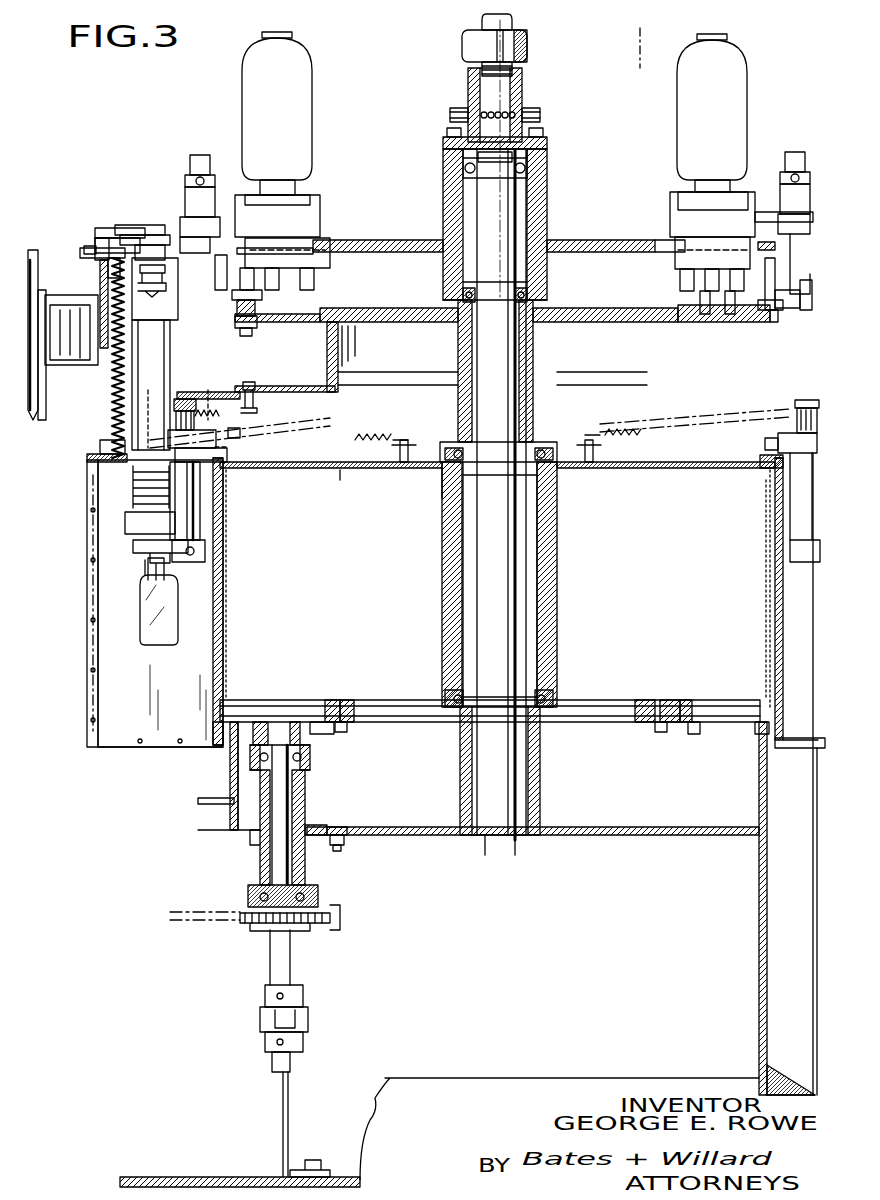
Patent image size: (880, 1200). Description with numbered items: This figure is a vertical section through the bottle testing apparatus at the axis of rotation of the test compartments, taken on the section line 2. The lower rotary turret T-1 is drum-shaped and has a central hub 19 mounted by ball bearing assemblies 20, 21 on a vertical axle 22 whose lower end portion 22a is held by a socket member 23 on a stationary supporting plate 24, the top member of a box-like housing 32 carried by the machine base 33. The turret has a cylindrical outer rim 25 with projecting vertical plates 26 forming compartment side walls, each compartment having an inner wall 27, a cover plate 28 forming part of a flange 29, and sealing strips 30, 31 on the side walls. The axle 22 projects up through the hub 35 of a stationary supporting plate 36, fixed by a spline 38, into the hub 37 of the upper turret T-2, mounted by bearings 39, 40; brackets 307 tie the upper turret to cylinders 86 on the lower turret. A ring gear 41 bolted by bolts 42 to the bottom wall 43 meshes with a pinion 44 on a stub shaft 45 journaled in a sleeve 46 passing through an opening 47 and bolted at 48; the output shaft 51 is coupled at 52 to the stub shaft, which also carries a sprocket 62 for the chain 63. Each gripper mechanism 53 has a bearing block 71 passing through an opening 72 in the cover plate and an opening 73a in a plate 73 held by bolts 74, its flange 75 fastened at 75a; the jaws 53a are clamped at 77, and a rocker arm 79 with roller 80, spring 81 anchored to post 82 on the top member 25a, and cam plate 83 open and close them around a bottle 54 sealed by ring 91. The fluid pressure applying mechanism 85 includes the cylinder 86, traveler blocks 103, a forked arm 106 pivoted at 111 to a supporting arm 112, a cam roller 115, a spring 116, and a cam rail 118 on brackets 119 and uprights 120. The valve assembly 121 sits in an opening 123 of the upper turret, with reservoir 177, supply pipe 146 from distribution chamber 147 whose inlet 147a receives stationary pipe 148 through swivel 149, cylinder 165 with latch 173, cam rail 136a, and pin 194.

The section line 2- 2 is at (80, 515).
The stationary fluid pressure supply pipe 148 is at (480, 22).
The fluid-tight swivel connection 149 is at (462, 47).
The inlet 147a is at (476, 75).
The common fluid pressure distribution chamber 147 is at (513, 107).
The main pressure air supply pipe 146 is at (538, 112).
The anti-friction bearing means 39 is at (560, 155).
The vertical hub 37 is at (560, 190).
The anti-friction bearing means 40 is at (550, 277).
The upper turret T-2 is at (455, 155).
The stationary supporting plate 36 is at (418, 312).
The spline 38 is at (535, 395).
The hub 35 is at (535, 409).
The central hub 19 is at (560, 590).
The vertical axle 22 is at (530, 572).
The ball bearing assembly 20 is at (442, 493).
The ball bearing assembly 21 is at (453, 692).
The vertical socket member 23 is at (550, 780).
The lower end portion 22a is at (477, 777).
The stationary supporting plate 24 is at (407, 827).
The lower rotary turret T-1 is at (362, 460).
The cylindrical outer rim 25 is at (240, 588).
The inner wall 27 is at (745, 657).
The top member 25a is at (340, 480).
The tension coil spring 81 is at (372, 480).
The fixed anchoring post 82 is at (604, 475).
The bottom wall 43 is at (642, 700).
The bolts 42 is at (343, 725).
The ring gear 41 is at (680, 745).
The pinion 44 is at (298, 705).
The vertical stub shaft 45 is at (320, 798).
The opening 47 is at (325, 830).
The bolting 48 is at (340, 850).
The vertical sleeve 46 is at (258, 862).
The sprocket 62 is at (260, 930).
The chain 63 is at (235, 905).
The coupling means 52 is at (305, 996).
The power output shaft 51 is at (275, 1068).
The machine base 33 is at (217, 1180).
The box-like housing 32 is at (782, 973).
The flexible sealing strip 31 is at (800, 773).
The flexible sealing strip 30 is at (88, 722).
The vertical plate 26 is at (178, 702).
The bottle 54 is at (185, 608).
The pressure sealing ring 91 is at (163, 563).
The gripper jaws 53a is at (135, 570).
The opening 72 is at (135, 470).
The plate 73 is at (247, 470).
The opening 73a is at (237, 443).
The vertical bearing block 71 is at (717, 555).
The gripper mechanism 53 is at (760, 510).
The clamping means 77 is at (708, 527).
The plate 28 is at (90, 455).
The outwardly extending flange 29 is at (113, 457).
The flange 75 is at (165, 442).
The bolts 74 is at (262, 438).
The rocker arm 79 is at (203, 392).
The cam follower roller 80 is at (180, 400).
The cam plate 83 is at (235, 428).
The fastening 75a is at (235, 438).
The fluid pressure applying mechanism 85 is at (190, 338).
The additional cam rail 136a is at (260, 352).
The brackets 307 is at (793, 317).
The latch opening upright pin 194 is at (770, 315).
The opening 123 is at (615, 260).
The valve assembly 121 is at (653, 198).
The pressure stabilizing reservoir 177 is at (722, 110).
The cylinder 165 is at (808, 155).
The uprights 120 is at (35, 245).
The free horizontal pivot 111 is at (130, 225).
The rod hold-up element 173 is at (165, 225).
The forked arm 106 is at (155, 230).
The cam roller 115 is at (100, 233).
The traveler blocks 103 is at (100, 252).
The stationary cam rail 118 is at (101, 281).
The supporting arm 112 is at (155, 289).
The tension coil spring 116 is at (110, 380).
The brackets 119 is at (67, 365).
The vertical cylinder 86 is at (125, 405).